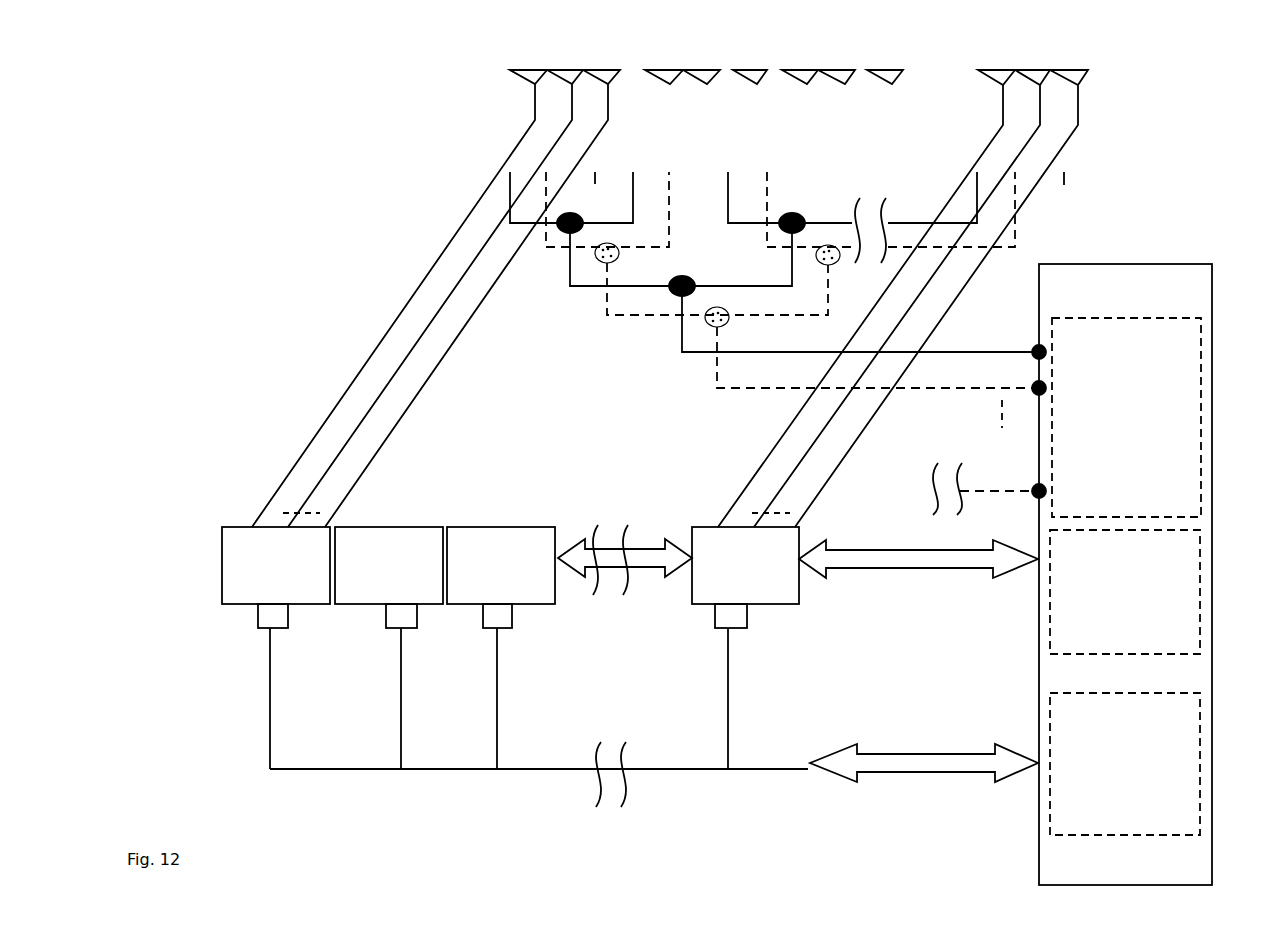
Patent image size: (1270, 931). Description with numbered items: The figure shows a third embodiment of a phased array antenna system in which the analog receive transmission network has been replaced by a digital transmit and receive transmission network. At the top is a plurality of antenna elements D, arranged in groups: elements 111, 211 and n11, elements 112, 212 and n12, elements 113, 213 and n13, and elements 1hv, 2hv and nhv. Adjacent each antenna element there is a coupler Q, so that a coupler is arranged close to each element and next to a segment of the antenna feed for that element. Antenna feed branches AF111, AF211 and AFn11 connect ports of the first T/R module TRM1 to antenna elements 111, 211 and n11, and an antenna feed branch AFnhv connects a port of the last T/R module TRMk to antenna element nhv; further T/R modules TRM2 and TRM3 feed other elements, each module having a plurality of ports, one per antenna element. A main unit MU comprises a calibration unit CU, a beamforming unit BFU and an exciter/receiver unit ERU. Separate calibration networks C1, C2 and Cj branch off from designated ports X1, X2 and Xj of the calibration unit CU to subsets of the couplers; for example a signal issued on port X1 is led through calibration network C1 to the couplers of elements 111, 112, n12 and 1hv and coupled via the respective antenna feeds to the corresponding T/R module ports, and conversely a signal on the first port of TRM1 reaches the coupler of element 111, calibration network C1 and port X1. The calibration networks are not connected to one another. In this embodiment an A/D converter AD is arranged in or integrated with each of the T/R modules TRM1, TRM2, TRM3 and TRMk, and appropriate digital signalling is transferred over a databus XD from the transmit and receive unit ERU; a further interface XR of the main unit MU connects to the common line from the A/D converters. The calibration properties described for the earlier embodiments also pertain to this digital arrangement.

The antenna element D is at (789, 47).
The coupler Q is at (561, 169).
The antenna element D111 / coupler Q111 111 is at (399, 288).
The antenna element D211 / coupler Q211 211 is at (478, 288).
The antenna element Dn11 / coupler Qn11 n11 is at (475, 288).
The antenna element D112 / coupler Q112 112 is at (655, 104).
The antenna element D212 / coupler Q212 212 is at (695, 104).
The antenna element Dn12 / coupler Qn12 n12 is at (784, 136).
The antenna element D113 / coupler Q113 113 is at (804, 148).
The antenna element D213 213 is at (837, 67).
The antenna element Dn13 n13 is at (885, 67).
The antenna element D1hv / coupler Q1hv 1hv is at (866, 288).
The antenna element D2hv / coupler Q2hv 2hv is at (902, 288).
The antenna element Dnhv / coupler Qnhv nhv is at (942, 288).
The calibration network C1 is at (860, 324).
The calibration network C2 is at (878, 357).
The calibration network Cj is at (986, 489).
The main unit MU is at (1125, 574).
The calibration unit CU is at (1126, 417).
The port X1 is at (1059, 354).
The port X2 is at (1059, 390).
The port Xj is at (1056, 493).
The beamforming unit BFU is at (1125, 592).
The databus XD is at (943, 559).
The exciter/receiver unit ERU is at (1125, 764).
The interface XR is at (948, 763).
The T/R module TRM1 is at (276, 648).
The T/R module TRM2 is at (389, 648).
The T/R module TRM3 is at (501, 648).
The T/R module TRMk is at (745, 648).
The A/D converter AD is at (260, 628).
The antenna feed branch AF111 is at (286, 488).
The antenna feed branch AF211 is at (352, 472).
The antenna feed branch AFn11 is at (420, 472).
The antenna feed branch AFnhv is at (807, 488).